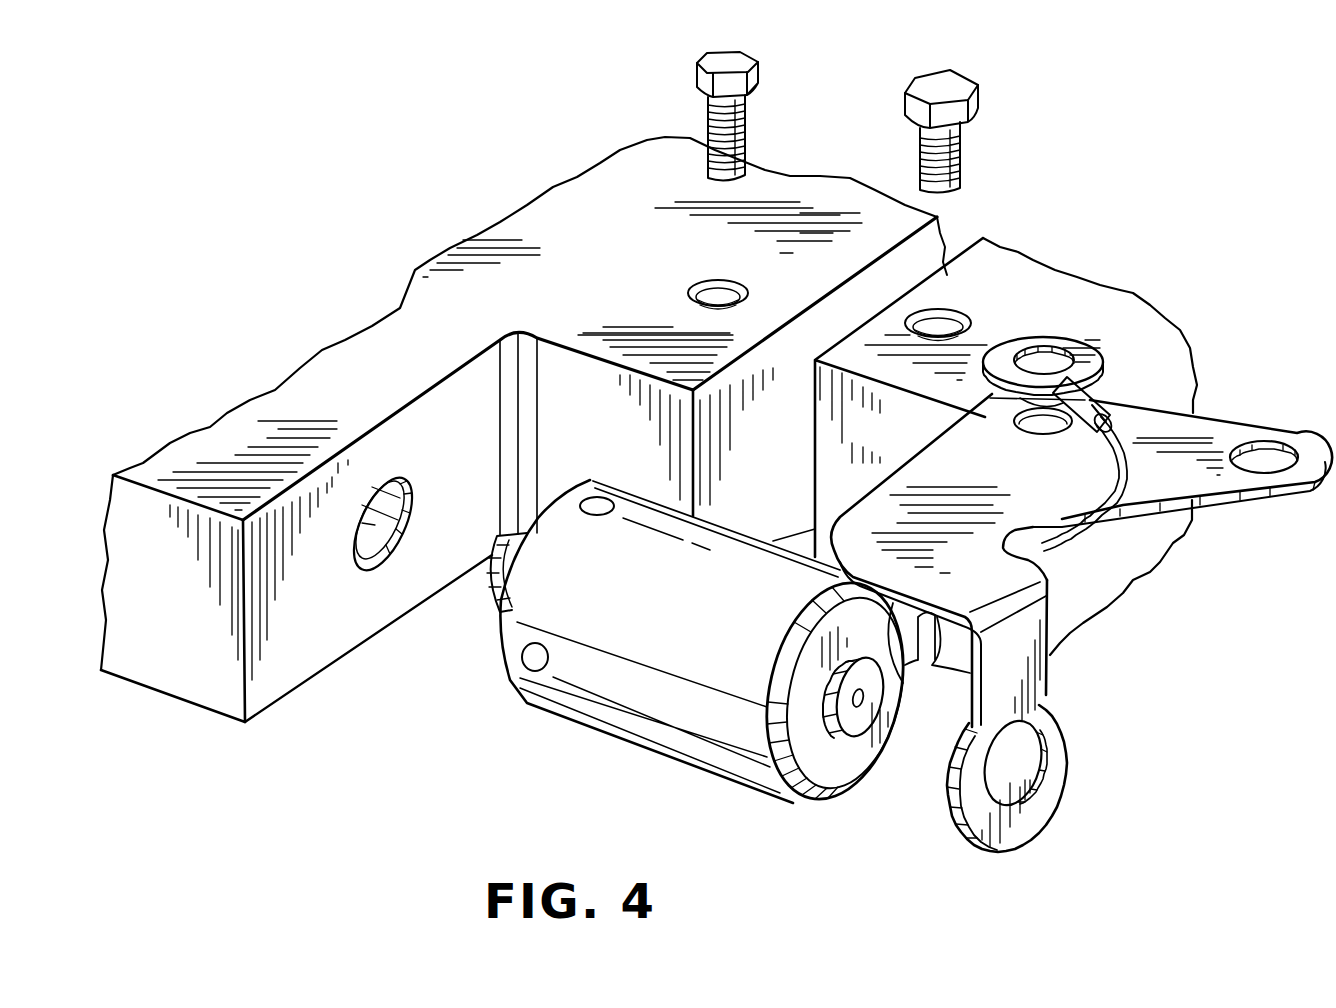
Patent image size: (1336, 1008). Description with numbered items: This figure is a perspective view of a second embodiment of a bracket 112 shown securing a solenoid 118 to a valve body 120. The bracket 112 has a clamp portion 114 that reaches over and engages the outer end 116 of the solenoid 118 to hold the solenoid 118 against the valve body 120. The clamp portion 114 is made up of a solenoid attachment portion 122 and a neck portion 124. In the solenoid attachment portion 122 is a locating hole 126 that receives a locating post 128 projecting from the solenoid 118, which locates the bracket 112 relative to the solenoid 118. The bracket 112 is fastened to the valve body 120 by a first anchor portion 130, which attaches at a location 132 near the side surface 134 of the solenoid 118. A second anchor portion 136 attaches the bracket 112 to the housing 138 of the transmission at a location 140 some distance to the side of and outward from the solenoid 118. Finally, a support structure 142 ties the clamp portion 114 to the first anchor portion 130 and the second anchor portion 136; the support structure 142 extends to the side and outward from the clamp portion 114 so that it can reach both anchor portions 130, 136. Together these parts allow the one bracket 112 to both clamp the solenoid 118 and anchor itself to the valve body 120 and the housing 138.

The bracket 112 is at (1113, 643).
The clamp portion 114 is at (1063, 703).
The outer end 116 is at (840, 773).
The solenoid 118 is at (618, 708).
The valve body 120 is at (310, 397).
The solenoid attachment portion 122 is at (1020, 820).
The neck portion 124 is at (1020, 665).
The locating hole 126 is at (1037, 758).
The locating post 128 is at (857, 720).
The first anchor portion 130 is at (1000, 447).
The location 132 is at (703, 288).
The side surface 134 is at (637, 490).
The second anchor portion 136 is at (1243, 428).
The housing 138 is at (1052, 293).
The location 140 is at (945, 313).
The support structure 142 is at (823, 563).